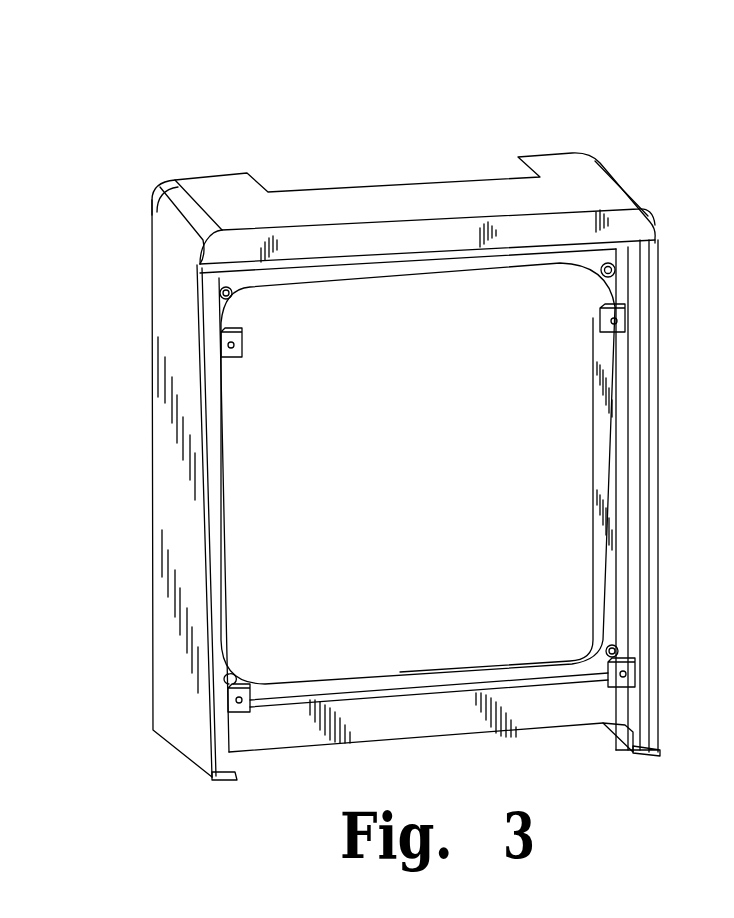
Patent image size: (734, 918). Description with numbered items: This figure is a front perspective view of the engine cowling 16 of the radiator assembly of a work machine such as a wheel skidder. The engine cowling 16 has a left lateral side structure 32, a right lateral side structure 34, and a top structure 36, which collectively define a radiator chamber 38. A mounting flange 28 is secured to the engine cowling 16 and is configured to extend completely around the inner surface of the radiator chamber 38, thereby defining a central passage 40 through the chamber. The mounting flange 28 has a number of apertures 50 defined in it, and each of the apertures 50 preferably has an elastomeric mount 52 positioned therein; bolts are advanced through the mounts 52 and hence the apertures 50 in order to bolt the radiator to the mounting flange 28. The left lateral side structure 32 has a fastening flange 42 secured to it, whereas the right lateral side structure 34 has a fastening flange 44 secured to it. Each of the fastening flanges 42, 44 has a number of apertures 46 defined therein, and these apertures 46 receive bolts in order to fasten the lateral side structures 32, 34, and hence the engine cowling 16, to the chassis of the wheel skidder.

The engine cowling 16 is at (262, 98).
The top structure 36 is at (595, 176).
The right lateral side structure 34 is at (157, 690).
The left lateral side structure 32 is at (657, 428).
The radiator chamber 38 is at (240, 523).
The mounting flange 28 is at (533, 676).
The central passage 40 is at (286, 683).
The elastomeric mount 52 is at (233, 295).
The aperture 50 is at (600, 274).
The aperture 46 is at (618, 728).
The fastening flange 42 is at (641, 757).
The fastening flange 44 is at (222, 783).